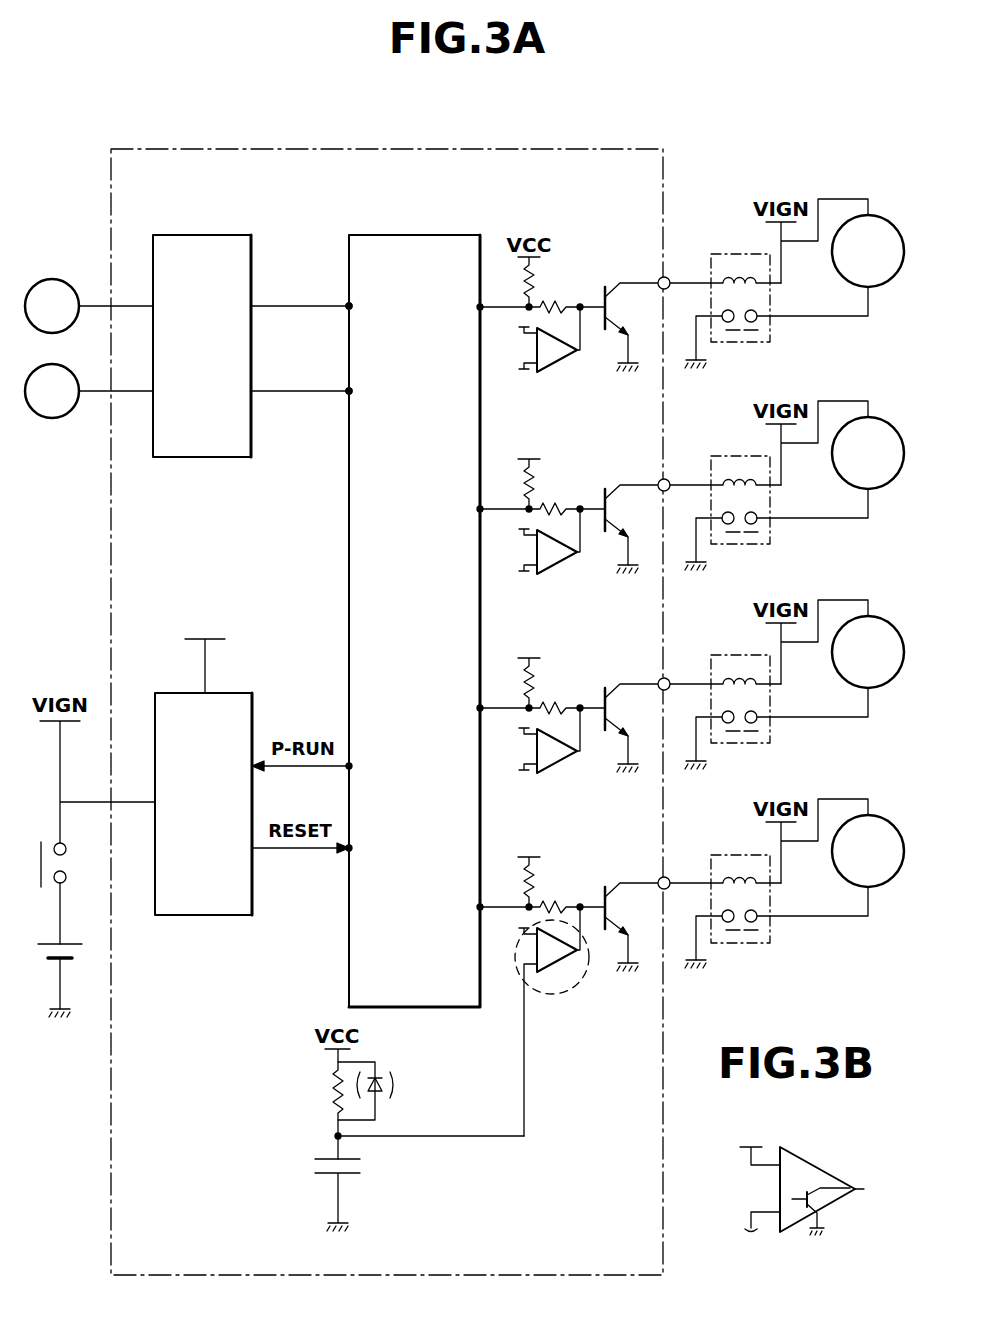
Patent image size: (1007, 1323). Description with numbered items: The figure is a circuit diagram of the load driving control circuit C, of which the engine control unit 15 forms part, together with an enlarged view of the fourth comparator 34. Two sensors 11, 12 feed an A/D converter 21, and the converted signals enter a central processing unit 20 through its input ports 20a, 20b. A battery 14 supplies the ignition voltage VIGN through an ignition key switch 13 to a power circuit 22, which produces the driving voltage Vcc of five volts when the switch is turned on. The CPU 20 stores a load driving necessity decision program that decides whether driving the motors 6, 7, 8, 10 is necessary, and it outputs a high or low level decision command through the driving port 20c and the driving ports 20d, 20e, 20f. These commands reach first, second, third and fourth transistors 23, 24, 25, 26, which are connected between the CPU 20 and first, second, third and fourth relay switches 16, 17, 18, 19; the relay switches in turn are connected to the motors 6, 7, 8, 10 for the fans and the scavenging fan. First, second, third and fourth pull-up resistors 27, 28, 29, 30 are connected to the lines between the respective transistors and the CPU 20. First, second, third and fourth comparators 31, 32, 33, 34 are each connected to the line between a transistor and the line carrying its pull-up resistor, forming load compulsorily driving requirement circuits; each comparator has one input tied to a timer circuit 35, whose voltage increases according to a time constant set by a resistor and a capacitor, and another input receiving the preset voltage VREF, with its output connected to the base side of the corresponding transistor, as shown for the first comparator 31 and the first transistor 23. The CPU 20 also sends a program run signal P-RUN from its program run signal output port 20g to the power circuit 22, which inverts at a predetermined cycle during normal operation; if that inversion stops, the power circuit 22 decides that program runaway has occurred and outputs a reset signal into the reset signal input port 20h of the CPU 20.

In FIG. 3A, the motor 6 is at (879, 218).
In FIG. 3A, the motor 7 is at (879, 420).
In FIG. 3A, the motor 8 is at (879, 619).
In FIG. 3A, the motor 10 is at (879, 818).
In FIG. 3A, the sensor 11 is at (68, 283).
In FIG. 3A, the sensor 12 is at (62, 415).
In FIG. 3A, the ignition key switch 13 is at (40, 858).
In FIG. 3A, the battery 14 is at (40, 950).
In FIG. 3A, the engine control unit 15 is at (660, 148).
In FIG. 3A, the first relay switch 16 is at (727, 252).
In FIG. 3A, the second relay switch 17 is at (727, 454).
In FIG. 3A, the third relay switch 18 is at (727, 653).
In FIG. 3A, the fourth relay switch 19 is at (727, 852).
In FIG. 3A, the central processing unit 20 is at (363, 234).
In FIG. 3A, the input port 20a is at (352, 306).
In FIG. 3A, the input port 20b is at (352, 391).
In FIG. 3A, the driving port 20c is at (478, 307).
In FIG. 3A, the driving port 20d is at (478, 509).
In FIG. 3A, the driving port 20e is at (478, 708).
In FIG. 3A, the driving port 20f is at (478, 907).
In FIG. 3A, the program run signal output port 20g is at (352, 766).
In FIG. 3A, the reset signal input port 20h is at (352, 848).
In FIG. 3A, the A/D converter 21 is at (165, 235).
In FIG. 3A, the power circuit 22 is at (245, 692).
In FIG. 3A, the first transistor 23 is at (616, 282).
In FIG. 3A, the second transistor 24 is at (616, 484).
In FIG. 3A, the third transistor 25 is at (616, 683).
In FIG. 3A, the fourth transistor 26 is at (616, 882).
In FIG. 3A, the first pull-up resistor 27 is at (536, 283).
In FIG. 3A, the second pull-up resistor 28 is at (536, 485).
In FIG. 3A, the third pull-up resistor 29 is at (536, 684).
In FIG. 3A, the fourth pull-up resistor 30 is at (536, 883).
In FIG. 3A, the first comparator 31 is at (556, 371).
In FIG. 3A, the second comparator 32 is at (556, 573).
In FIG. 3A, the third comparator 33 is at (556, 772).
In FIG. 3A, the fourth comparator 34 is at (556, 968).
In FIG. 3B, the fourth comparator 34 is at (815, 1168).
In FIG. 3A, the timer circuit 35 is at (334, 1088).
In FIG. 3A, the load driving control circuit C is at (727, 145).